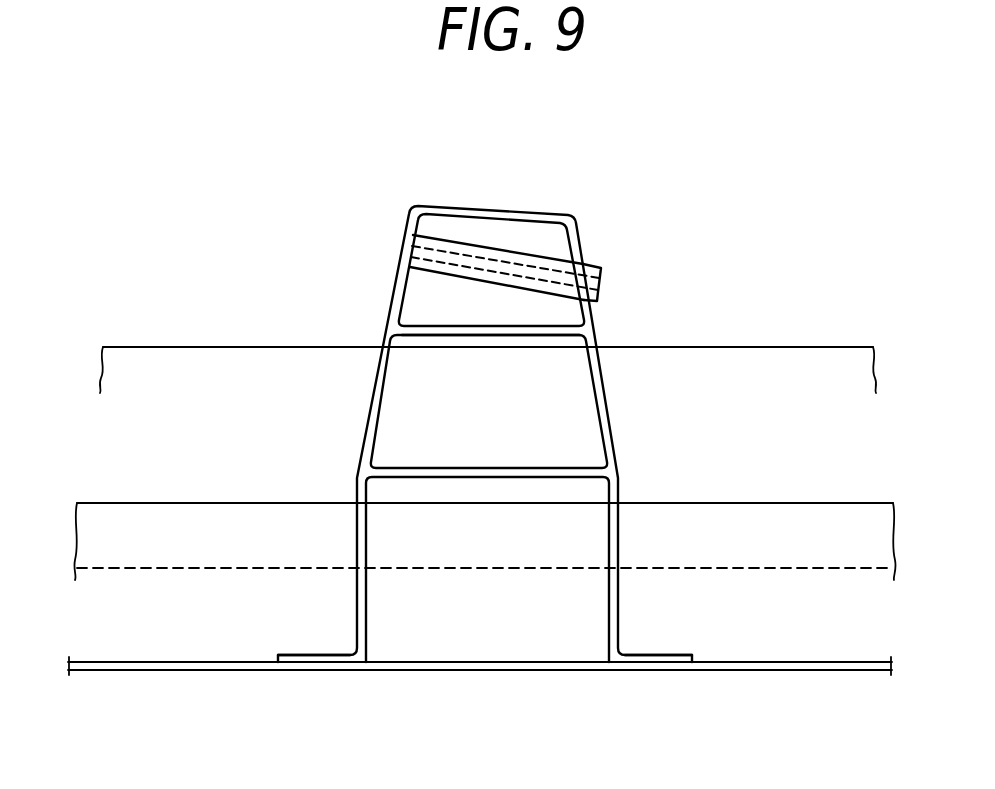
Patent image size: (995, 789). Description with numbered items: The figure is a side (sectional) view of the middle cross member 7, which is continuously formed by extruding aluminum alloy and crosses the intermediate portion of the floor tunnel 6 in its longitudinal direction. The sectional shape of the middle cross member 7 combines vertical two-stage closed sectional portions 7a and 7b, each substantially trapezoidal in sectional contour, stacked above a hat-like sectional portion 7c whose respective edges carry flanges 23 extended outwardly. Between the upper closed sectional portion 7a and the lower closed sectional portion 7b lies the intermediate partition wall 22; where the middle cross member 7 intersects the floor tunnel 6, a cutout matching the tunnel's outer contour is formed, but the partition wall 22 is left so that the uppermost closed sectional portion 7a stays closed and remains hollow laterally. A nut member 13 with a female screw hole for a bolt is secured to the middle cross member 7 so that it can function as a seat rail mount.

The floor tunnel 6 is at (823, 347).
The middle cross member 7 is at (565, 190).
The closed sectional portion 7a is at (408, 295).
The closed sectional portion 7b is at (393, 410).
The hat-like sectional portion 7c is at (371, 538).
The nut member 13 is at (470, 242).
The intermediate partition wall 22 is at (505, 336).
The flange 23 is at (305, 653).